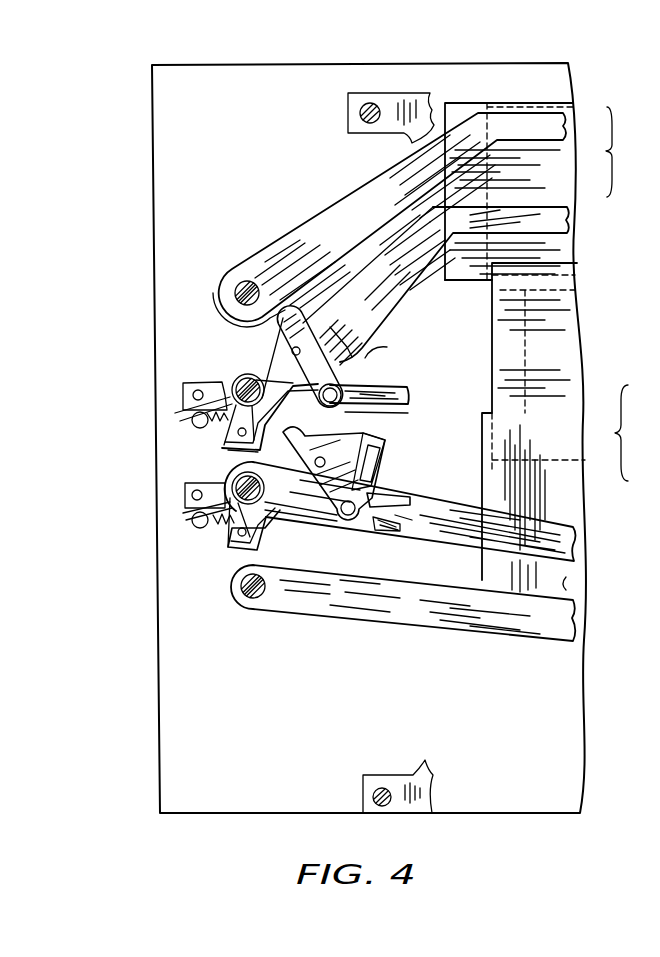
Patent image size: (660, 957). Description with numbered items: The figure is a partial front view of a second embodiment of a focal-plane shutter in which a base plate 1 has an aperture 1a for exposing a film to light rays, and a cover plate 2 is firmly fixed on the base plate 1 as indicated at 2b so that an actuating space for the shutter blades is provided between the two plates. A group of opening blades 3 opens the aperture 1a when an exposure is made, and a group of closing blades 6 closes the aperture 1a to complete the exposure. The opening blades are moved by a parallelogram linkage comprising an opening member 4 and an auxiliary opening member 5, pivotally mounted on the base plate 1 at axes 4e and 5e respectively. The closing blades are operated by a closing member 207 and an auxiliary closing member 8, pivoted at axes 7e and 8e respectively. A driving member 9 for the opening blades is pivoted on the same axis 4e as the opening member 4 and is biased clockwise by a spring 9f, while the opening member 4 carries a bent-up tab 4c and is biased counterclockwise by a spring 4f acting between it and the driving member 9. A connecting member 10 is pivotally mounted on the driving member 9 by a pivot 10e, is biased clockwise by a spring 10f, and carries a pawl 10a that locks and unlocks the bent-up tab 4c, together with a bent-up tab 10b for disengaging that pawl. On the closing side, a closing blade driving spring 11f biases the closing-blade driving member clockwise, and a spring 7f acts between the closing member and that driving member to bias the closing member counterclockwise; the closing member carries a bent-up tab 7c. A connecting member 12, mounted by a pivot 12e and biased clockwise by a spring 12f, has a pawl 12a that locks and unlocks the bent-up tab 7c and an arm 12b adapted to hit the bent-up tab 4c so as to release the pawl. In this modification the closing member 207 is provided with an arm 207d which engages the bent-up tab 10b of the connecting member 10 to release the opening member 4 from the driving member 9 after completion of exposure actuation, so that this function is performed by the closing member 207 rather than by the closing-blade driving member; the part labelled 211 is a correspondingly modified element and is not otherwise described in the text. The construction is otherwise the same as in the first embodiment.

The base plate 1 is at (584, 708).
The aperture 1a is at (568, 579).
The cover plate 2 is at (428, 776).
The fixing point 2b is at (358, 112).
The group of opening blades 3 is at (564, 433).
The opening member 4 is at (545, 533).
The bent-up tab 4c is at (393, 452).
The axis 4e is at (262, 493).
The spring 4f is at (218, 519).
The auxiliary opening member 5 is at (560, 632).
The axis 5e is at (240, 585).
The group of closing blades 6 is at (540, 191).
The bent-up tab 7c is at (312, 308).
The axis 7e is at (240, 377).
The spring 7f is at (193, 413).
The auxiliary closing member 8 is at (543, 117).
The axis 8e is at (240, 286).
The driving member 9 is at (325, 515).
The spring 9f is at (182, 515).
The connecting member 10 is at (313, 505).
The pawl 10a is at (385, 436).
The bent-up tab 10b is at (260, 455).
The pivot 10e is at (345, 525).
The spring 10f is at (403, 520).
The closing blade driving spring 11f is at (182, 410).
The connecting member 12 is at (240, 328).
The pawl 12a is at (273, 260).
The arm 12b is at (408, 394).
The pivot 12e is at (394, 347).
The spring 12f is at (330, 327).
The closing member 207 is at (557, 220).
The arm 207d is at (365, 412).
The bent plate 211 is at (273, 353).